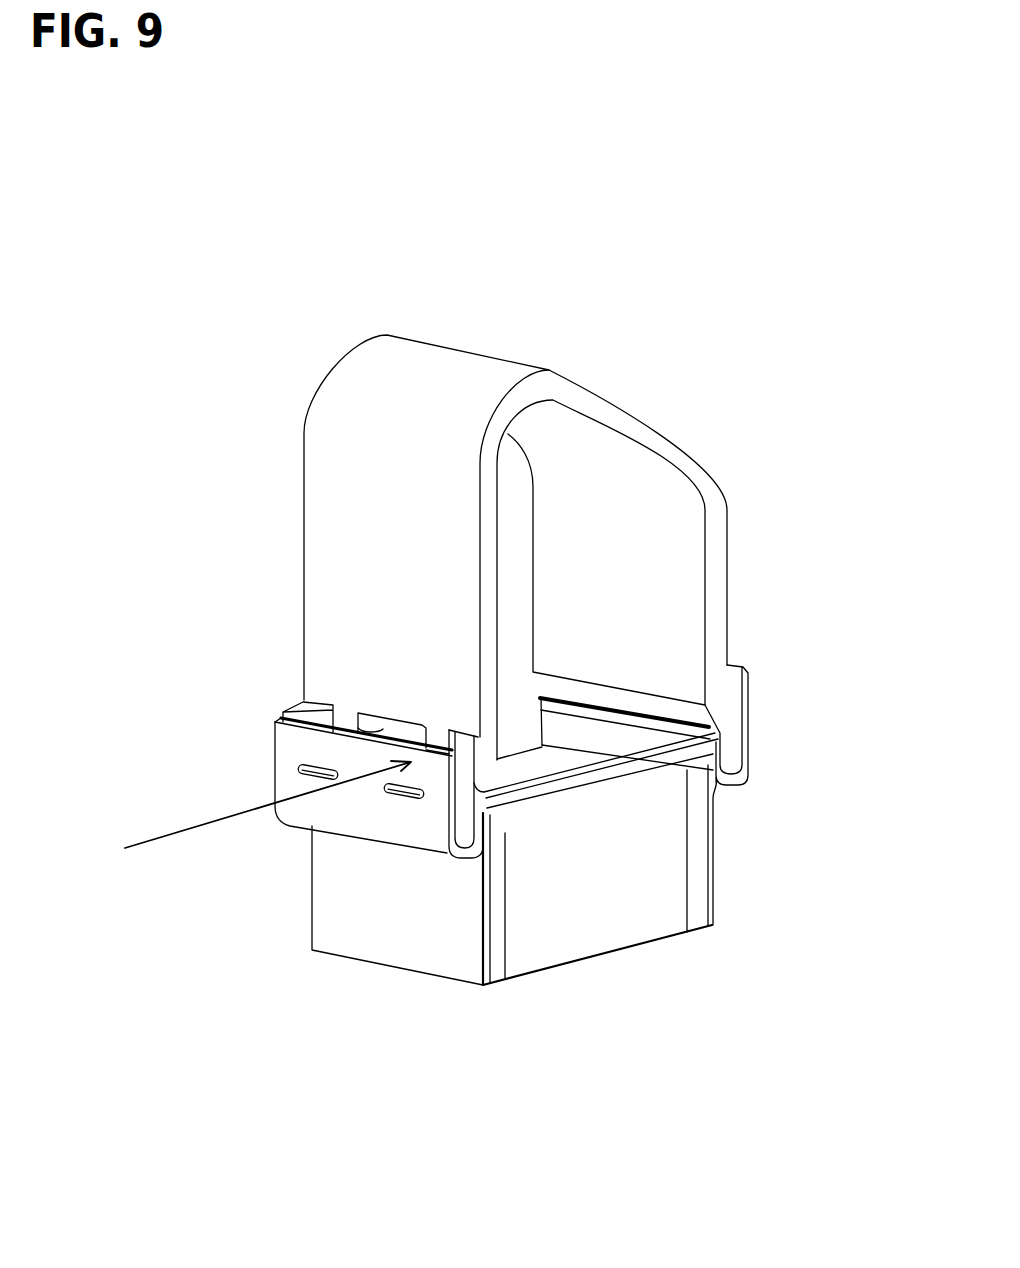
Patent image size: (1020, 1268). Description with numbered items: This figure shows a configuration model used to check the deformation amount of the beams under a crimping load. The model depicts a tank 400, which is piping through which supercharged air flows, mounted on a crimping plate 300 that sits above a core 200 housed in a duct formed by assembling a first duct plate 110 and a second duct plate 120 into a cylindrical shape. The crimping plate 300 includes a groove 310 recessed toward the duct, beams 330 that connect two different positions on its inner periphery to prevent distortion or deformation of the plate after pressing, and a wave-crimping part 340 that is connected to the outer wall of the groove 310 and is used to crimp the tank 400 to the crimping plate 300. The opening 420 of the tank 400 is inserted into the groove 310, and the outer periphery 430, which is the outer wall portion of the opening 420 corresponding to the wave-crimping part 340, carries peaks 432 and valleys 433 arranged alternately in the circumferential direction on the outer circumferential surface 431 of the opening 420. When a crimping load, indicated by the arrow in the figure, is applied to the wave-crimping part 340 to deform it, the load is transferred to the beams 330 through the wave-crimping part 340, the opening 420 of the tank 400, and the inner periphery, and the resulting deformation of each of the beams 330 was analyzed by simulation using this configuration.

The tank 400 is at (658, 438).
The outer circumferential surface 431 is at (323, 525).
The peaks 432 is at (460, 733).
The valleys 433 is at (435, 740).
The wave-crimping part 340 is at (293, 737).
The groove 310 is at (297, 827).
The crimping plate 300 is at (752, 698).
The beams 330 is at (615, 763).
The opening 420 is at (465, 807).
The outer periphery 430 is at (497, 762).
The first duct plate 110 is at (455, 950).
The core 200 is at (628, 917).
The second duct plate 120 is at (713, 877).